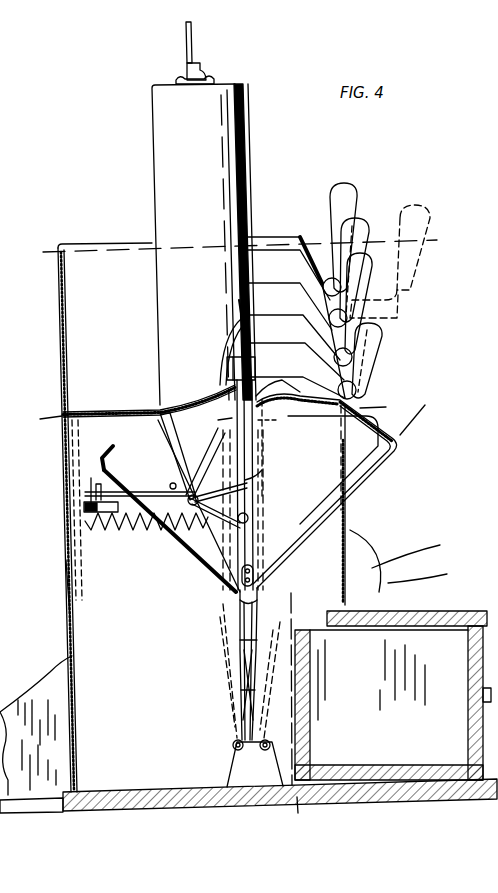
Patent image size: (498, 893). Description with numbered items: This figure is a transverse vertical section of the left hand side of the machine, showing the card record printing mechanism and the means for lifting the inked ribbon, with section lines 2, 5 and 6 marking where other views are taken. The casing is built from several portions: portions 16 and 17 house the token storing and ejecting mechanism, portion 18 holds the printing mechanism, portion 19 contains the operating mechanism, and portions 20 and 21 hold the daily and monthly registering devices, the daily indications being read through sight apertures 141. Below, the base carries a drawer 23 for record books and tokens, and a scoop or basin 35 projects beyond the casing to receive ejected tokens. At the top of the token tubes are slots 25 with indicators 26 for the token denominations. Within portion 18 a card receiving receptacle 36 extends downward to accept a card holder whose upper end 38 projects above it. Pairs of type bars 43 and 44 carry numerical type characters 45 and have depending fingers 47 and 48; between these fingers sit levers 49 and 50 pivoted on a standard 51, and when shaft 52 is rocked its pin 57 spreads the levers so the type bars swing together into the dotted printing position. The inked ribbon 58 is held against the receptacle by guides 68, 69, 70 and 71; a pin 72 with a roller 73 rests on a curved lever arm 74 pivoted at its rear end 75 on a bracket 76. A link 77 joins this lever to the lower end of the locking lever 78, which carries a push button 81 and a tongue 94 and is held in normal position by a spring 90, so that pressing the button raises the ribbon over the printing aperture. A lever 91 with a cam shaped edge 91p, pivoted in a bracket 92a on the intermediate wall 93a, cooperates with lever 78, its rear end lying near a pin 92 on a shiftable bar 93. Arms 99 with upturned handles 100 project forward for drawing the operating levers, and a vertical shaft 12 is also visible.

The section line 2- 2 is at (240, 242).
The section line 5- 5 is at (210, 414).
The section line 6- 6 is at (365, 609).
The vertical shaft 12 is at (253, 573).
The casing portion 16 is at (241, 150).
The casing portion 17 is at (83, 250).
The casing portion 18 is at (392, 448).
The casing portion 19 is at (292, 238).
The casing portion 20 is at (415, 553).
The casing portion 21 is at (34, 684).
The drawer 23 is at (418, 636).
The slots 25 is at (186, 69).
The indicators 26 is at (194, 50).
The scoop or basin 35 is at (428, 578).
The card receiving receptacle 36 is at (227, 371).
The upper end of holder 38 is at (226, 352).
The type bar 43 is at (382, 462).
The type bar 44 is at (118, 491).
The numerical type characters 45 is at (375, 446).
The finger 47 is at (240, 630).
The finger 48 is at (260, 598).
The lever 49 is at (243, 670).
The lever 50 is at (258, 664).
The standard 51 is at (233, 763).
The shaft 52 is at (287, 709).
The pin 57 is at (232, 692).
The inked ribbon 58 is at (264, 432).
The guide 68 is at (279, 421).
The guide 69 is at (258, 393).
The guide 70 is at (215, 388).
The guide 71 is at (218, 420).
The pin 72 is at (252, 490).
The roller 73 is at (230, 527).
The curved lever arm 74 is at (250, 519).
The rear end pivot 75 is at (188, 501).
The bracket 76 is at (165, 440).
The link 77 is at (200, 555).
The locking lever 78 is at (212, 460).
The push button 81 is at (243, 316).
The spring 90 is at (152, 528).
The lever 91 is at (110, 449).
The cam shaped edge 91p is at (246, 477).
The pin 92 is at (95, 488).
The bracket 92a is at (186, 494).
The shiftable bar 93 is at (84, 506).
The intermediate wall 93a is at (97, 597).
The tongue 94 is at (251, 368).
The arms 99 is at (357, 390).
The upturned handles 100 is at (372, 347).
The sight apertures 141 is at (376, 560).